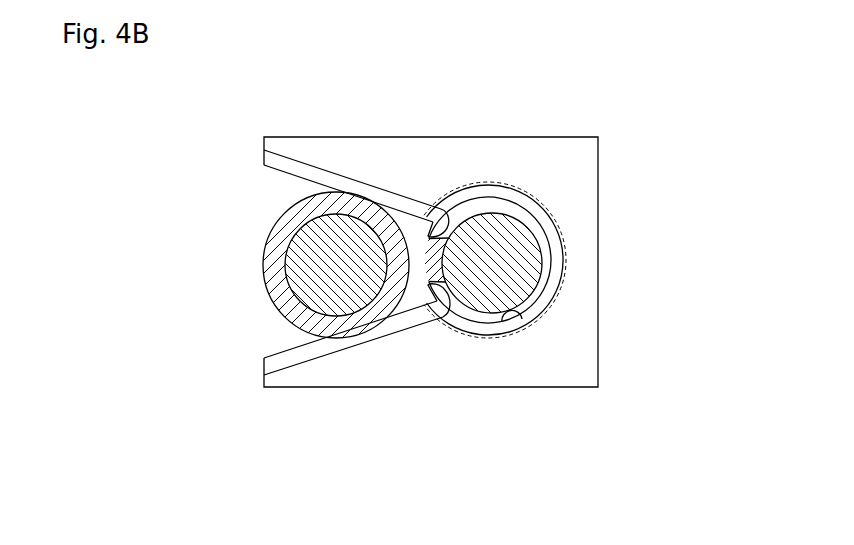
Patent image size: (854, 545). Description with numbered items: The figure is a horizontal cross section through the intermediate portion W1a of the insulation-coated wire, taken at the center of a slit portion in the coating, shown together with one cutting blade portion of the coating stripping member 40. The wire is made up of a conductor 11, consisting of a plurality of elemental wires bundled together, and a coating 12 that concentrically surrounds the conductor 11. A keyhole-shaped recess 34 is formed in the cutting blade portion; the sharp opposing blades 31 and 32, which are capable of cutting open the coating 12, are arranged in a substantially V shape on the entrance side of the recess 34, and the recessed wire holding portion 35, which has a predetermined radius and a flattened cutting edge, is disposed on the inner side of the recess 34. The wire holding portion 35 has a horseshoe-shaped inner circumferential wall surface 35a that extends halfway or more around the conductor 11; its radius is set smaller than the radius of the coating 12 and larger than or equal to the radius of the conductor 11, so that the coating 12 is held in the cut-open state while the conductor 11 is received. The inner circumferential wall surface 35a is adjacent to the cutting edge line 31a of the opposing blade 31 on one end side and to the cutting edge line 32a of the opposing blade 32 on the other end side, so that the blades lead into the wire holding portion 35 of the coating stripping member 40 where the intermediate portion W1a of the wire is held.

The coating stripping member 40 is at (613, 165).
The opposing blade 32 is at (312, 157).
The cutting edge line 32a is at (306, 189).
The opposing blade 31 is at (311, 363).
The cutting edge line 31a is at (297, 350).
The intermediate portion W1a is at (337, 260).
The recess 34 is at (262, 264).
The wire holding portion 35 is at (525, 224).
The inner circumferential wall surface 35a is at (515, 318).
The coating 12 is at (504, 260).
The conductor 11 is at (533, 272).